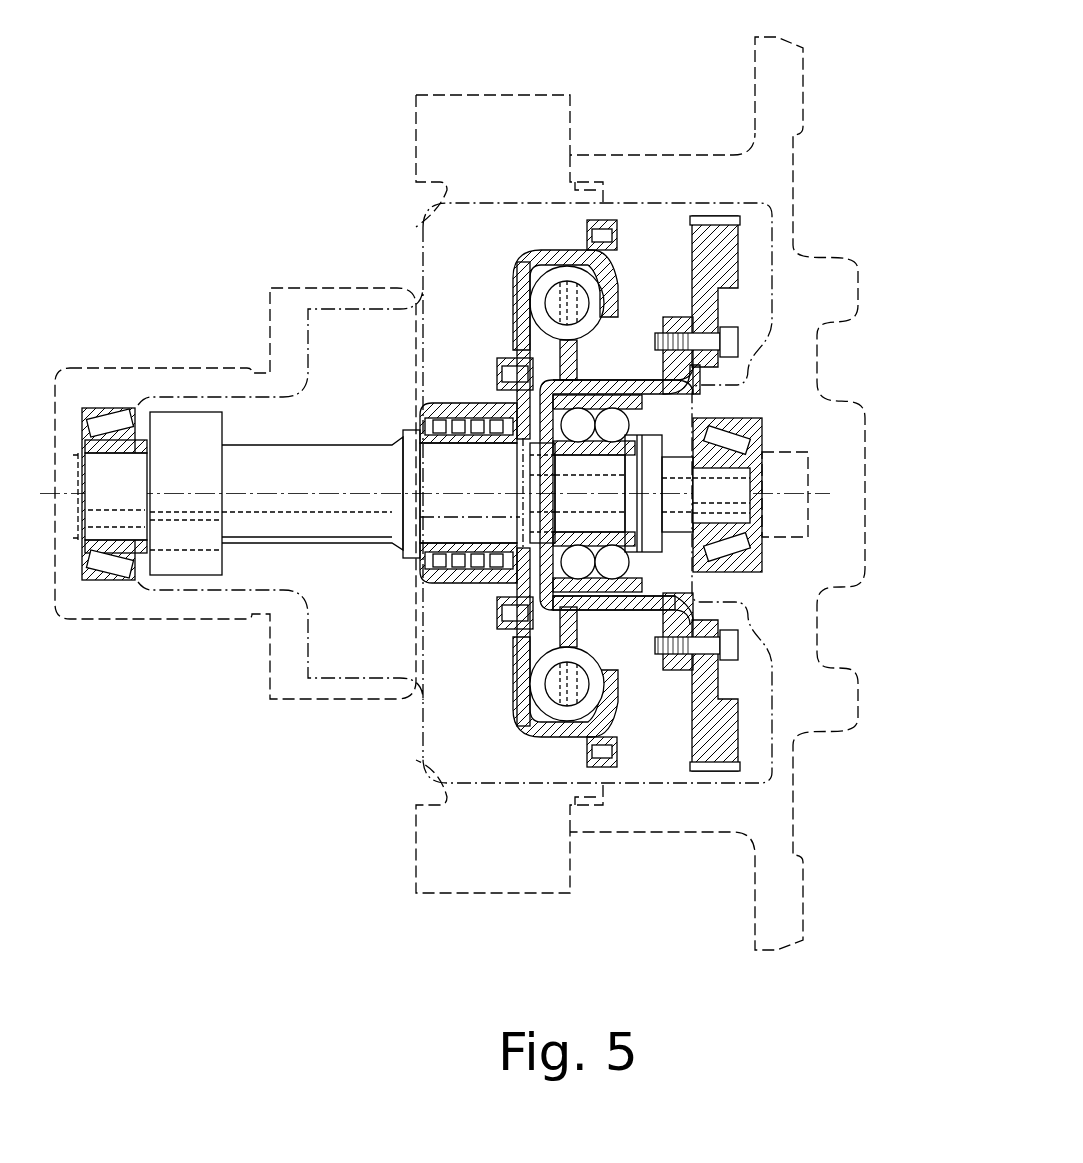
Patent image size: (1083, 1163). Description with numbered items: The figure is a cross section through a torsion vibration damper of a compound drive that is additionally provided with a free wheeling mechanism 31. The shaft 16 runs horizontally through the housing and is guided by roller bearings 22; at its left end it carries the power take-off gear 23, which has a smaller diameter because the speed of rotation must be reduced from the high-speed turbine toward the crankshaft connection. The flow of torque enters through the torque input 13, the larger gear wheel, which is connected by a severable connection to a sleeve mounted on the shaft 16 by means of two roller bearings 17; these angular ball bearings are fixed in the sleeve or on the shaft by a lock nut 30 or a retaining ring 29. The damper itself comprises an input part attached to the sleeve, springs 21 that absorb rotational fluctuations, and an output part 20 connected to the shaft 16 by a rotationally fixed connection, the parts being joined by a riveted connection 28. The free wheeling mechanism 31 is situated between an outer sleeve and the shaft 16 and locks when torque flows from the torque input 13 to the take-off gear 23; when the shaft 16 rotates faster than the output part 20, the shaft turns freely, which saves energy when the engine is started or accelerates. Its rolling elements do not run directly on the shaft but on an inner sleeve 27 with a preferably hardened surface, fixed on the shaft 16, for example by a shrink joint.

The torque input 13 is at (730, 218).
The shaft 16 is at (285, 494).
The roller bearing 17 is at (610, 603).
The output part 20 is at (550, 736).
The spring 21 is at (513, 298).
The roller bearing of shaft 22 is at (104, 430).
The power take-off gear 23 is at (186, 493).
The inner sleeve 27 is at (471, 585).
The riveted connection 28 is at (617, 232).
The retaining ring 29 is at (648, 392).
The lock nut 30 is at (660, 530).
The free wheeling mechanism 31 is at (471, 405).